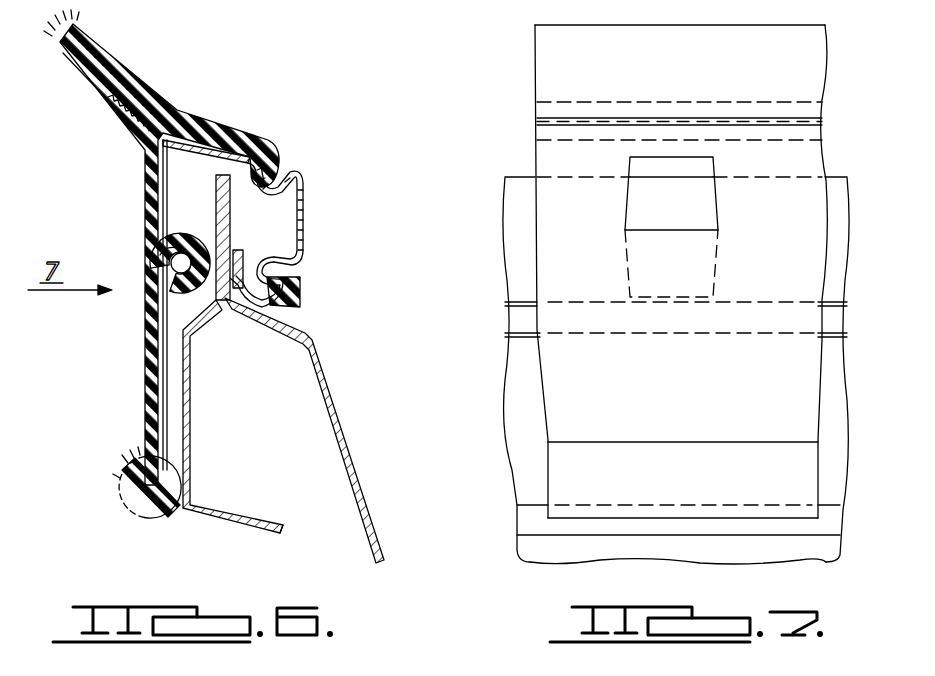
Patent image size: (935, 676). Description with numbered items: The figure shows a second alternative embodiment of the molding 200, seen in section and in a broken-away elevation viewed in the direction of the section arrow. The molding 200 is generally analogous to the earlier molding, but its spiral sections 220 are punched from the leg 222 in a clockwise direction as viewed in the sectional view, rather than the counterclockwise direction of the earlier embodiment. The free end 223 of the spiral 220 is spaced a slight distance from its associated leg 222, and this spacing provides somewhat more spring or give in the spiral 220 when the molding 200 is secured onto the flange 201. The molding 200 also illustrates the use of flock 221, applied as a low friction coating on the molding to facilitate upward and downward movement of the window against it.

In FIG. 6, the molding 200 is at (100, 168).
In FIG. 7, the molding 200 is at (505, 153).
In FIG. 6, the flange 201 is at (236, 183).
In FIG. 7, the flange 201 is at (652, 205).
In FIG. 6, the spiral section 220 is at (152, 240).
In FIG. 7, the spiral section 220 is at (655, 280).
In FIG. 6, the flock 221 is at (60, 42).
In FIG. 7, the flock 221 is at (560, 43).
In FIG. 6, the leg 222 is at (158, 412).
In FIG. 6, the free end 223 is at (178, 268).